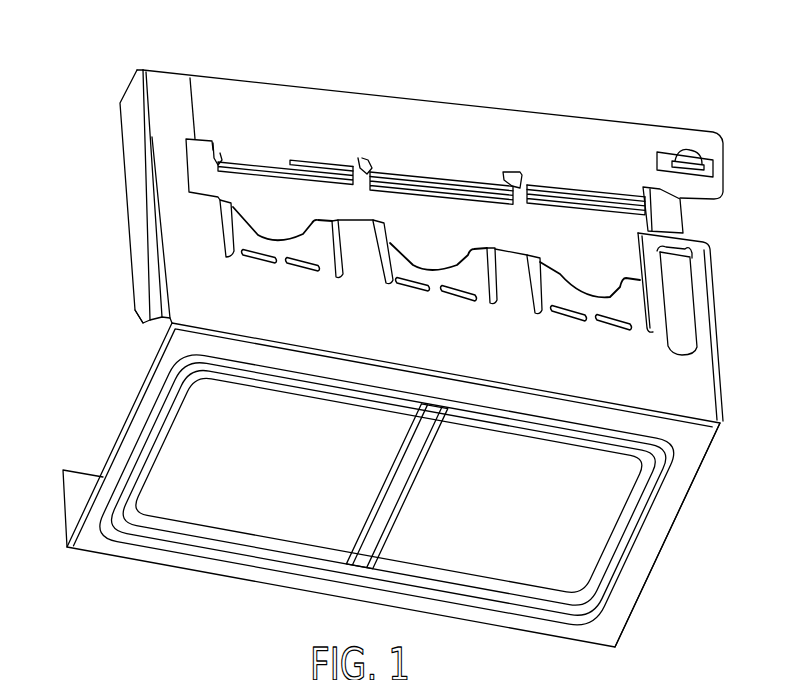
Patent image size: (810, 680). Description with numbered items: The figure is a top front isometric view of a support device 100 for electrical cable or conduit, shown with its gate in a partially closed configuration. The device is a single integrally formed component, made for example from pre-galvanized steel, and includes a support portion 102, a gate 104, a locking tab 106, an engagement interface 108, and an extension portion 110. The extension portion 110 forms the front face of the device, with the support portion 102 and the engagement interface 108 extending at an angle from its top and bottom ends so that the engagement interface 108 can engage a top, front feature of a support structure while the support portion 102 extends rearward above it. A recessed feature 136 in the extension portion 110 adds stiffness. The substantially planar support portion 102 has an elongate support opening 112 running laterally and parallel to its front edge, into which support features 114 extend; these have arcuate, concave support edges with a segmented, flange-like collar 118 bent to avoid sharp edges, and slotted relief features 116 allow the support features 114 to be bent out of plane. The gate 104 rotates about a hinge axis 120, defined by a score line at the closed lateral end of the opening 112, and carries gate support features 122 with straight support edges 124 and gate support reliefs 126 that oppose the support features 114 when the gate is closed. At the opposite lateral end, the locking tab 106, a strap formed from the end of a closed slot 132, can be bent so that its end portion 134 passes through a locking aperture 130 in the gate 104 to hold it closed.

The support device 100 is at (621, 46).
The support portion 102 is at (702, 393).
The gate 104 is at (453, 121).
The locking tab 106 is at (676, 218).
The engagement interface 108 is at (63, 503).
The extension portion 110 is at (666, 545).
The support opening 112 is at (210, 172).
The support features 114 is at (228, 233).
The slotted relief features 116 is at (248, 258).
The collar 118 is at (303, 236).
The hinge axis 120 is at (190, 90).
The gate support features 122 is at (216, 158).
The support edges 124 is at (287, 170).
The gate support reliefs 126 is at (307, 157).
The locking aperture 130 is at (704, 160).
The closed slot 132 is at (693, 346).
The end portion 134 is at (686, 160).
The recessed feature 136 is at (224, 520).